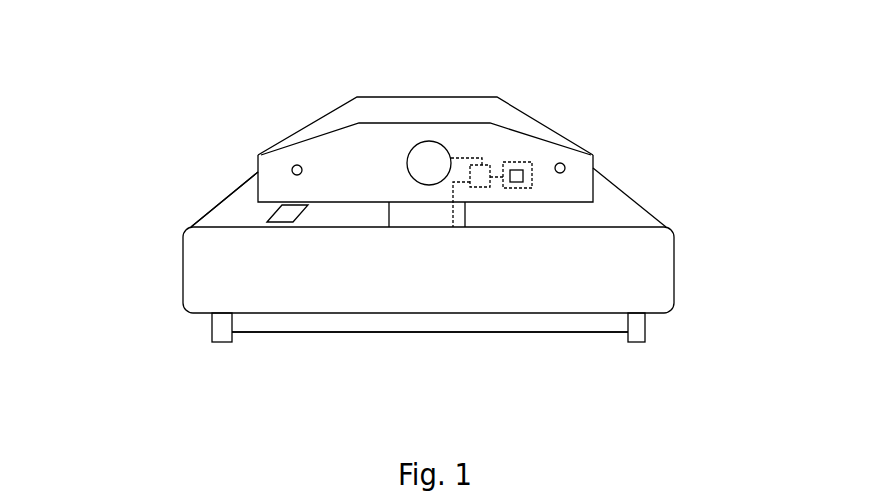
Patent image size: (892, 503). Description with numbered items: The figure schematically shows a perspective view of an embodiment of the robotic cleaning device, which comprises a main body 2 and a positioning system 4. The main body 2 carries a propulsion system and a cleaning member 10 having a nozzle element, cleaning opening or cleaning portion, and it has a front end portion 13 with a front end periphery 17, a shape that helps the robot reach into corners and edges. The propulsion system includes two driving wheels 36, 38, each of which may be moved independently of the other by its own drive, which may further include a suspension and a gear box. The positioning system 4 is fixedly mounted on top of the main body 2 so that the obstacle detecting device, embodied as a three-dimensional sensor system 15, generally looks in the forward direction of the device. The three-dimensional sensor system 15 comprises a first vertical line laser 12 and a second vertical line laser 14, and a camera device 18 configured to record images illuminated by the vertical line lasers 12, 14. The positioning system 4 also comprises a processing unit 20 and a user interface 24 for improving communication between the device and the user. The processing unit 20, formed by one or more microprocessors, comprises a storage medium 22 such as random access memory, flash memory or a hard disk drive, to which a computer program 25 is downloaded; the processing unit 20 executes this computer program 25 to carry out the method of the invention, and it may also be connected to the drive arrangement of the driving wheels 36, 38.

The main body 2 is at (221, 126).
The positioning system 4 is at (480, 97).
The cleaning member 10 is at (411, 347).
The first vertical line laser 12 is at (294, 166).
The front end portion 13 is at (218, 218).
The second vertical line laser 14 is at (564, 164).
The 3D sensor system 15 is at (366, 108).
The front end periphery 17 is at (652, 278).
The camera device 18 is at (418, 141).
The processing unit 20 is at (490, 163).
The storage medium 22 is at (532, 160).
The user interface 24 is at (261, 217).
The computer program 25 is at (526, 177).
The driving wheel 36 is at (212, 343).
The driving wheel 38 is at (645, 342).